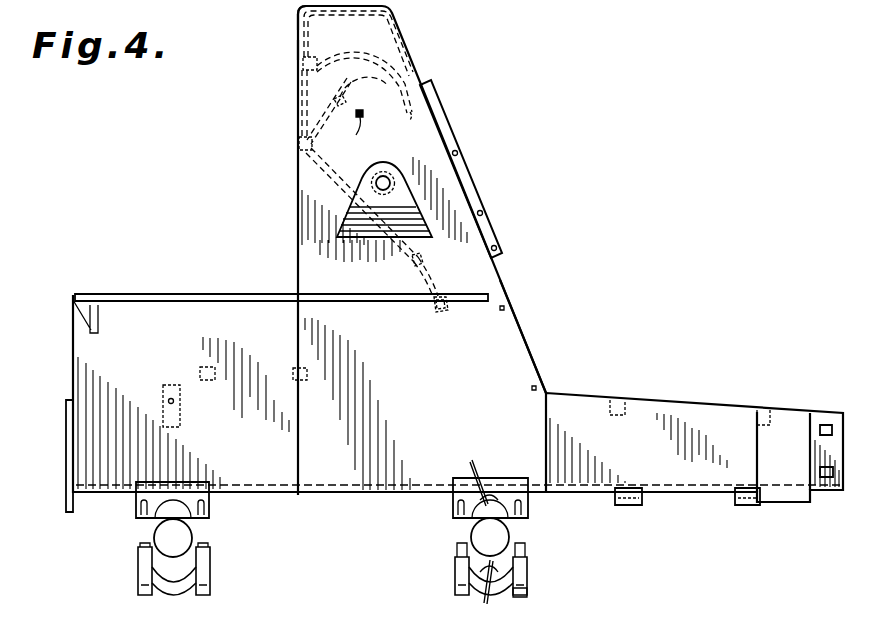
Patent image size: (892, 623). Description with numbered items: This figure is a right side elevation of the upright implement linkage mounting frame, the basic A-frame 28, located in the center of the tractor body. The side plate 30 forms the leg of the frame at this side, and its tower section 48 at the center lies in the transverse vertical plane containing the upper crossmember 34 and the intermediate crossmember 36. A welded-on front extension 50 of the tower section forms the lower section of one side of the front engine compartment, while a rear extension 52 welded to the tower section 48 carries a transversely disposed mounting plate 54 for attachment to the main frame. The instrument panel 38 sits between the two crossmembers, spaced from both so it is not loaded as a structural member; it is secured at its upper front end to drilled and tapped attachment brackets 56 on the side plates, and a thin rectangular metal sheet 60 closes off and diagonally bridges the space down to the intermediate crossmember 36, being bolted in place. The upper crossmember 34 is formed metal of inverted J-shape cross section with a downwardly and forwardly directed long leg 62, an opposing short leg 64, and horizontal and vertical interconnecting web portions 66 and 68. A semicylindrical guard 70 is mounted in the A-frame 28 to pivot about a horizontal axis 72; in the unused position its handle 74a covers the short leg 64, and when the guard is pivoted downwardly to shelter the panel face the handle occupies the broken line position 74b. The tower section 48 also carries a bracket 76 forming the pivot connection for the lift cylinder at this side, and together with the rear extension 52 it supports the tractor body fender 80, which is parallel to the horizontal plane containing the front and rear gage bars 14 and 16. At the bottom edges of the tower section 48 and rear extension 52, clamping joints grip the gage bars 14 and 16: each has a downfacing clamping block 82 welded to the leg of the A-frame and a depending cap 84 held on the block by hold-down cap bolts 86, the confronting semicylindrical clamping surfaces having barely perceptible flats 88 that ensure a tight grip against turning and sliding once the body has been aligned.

The front gage bar 14 is at (501, 535).
The rear gage bar 16 is at (184, 538).
The A-frame 28 is at (297, 9).
The side plate 30 is at (447, 192).
The upper crossmember 34 is at (395, 30).
The intermediate crossmember 36 is at (432, 270).
The instrument panel 38 is at (303, 104).
The tower section 48 is at (510, 340).
The front extension 50 is at (651, 413).
The rear extension 52 is at (122, 316).
The mounting plate 54 is at (65, 428).
The attachment bracket 56 is at (364, 94).
The rectangular metal sheet 60 is at (350, 168).
The long leg 62 is at (422, 84).
The short leg 64 is at (319, 58).
The horizontal web portion 66 is at (356, 18).
The vertical web portion 68 is at (296, 49).
The semicylindrical guard 70 is at (412, 48).
The horizontal axis 72 is at (346, 130).
The handle 74a is at (303, 83).
The handle broken line position 74b is at (299, 143).
The bracket 76 is at (368, 190).
The tractor body fender 80 is at (467, 297).
The clamping block 82 is at (502, 478).
The cap 84 is at (528, 570).
The hold-down cap bolt 86 is at (518, 592).
The flats 88 is at (472, 529).